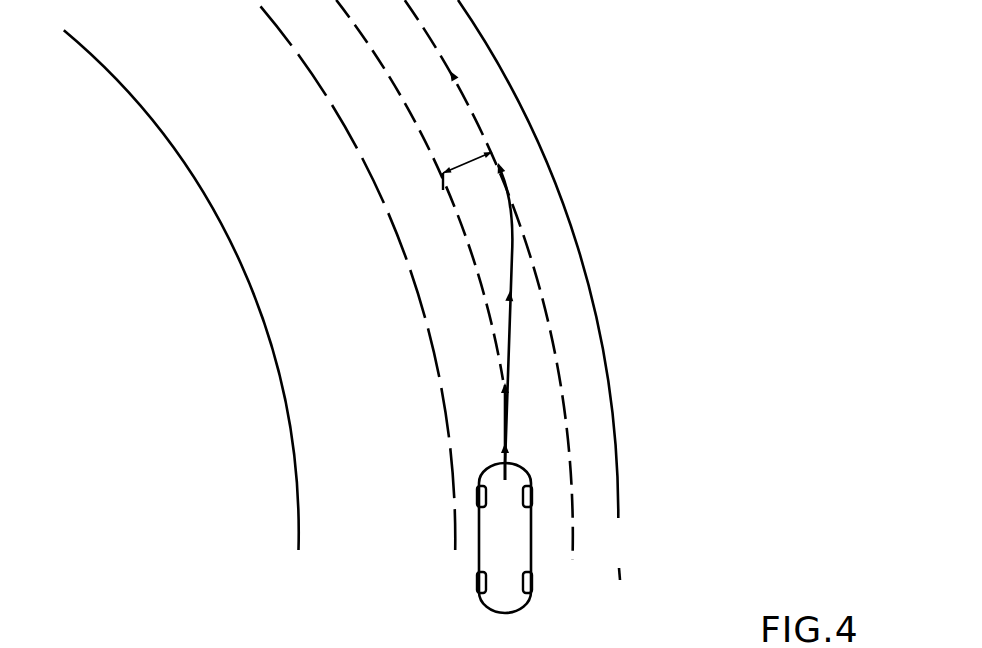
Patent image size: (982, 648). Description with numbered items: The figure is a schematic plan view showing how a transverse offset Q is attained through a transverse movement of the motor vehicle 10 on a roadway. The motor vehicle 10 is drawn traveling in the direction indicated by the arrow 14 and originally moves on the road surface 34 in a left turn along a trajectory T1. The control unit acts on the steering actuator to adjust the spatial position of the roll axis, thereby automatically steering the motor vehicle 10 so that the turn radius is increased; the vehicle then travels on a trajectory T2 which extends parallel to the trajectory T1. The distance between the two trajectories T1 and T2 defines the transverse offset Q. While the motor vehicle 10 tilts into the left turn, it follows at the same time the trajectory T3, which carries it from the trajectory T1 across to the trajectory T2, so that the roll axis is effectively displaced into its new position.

The motor vehicle 10 is at (534, 543).
The arrow indicating direction of travel 14 is at (513, 455).
The road surface 34 is at (393, 450).
The trajectory T1 is at (403, 98).
The trajectory T2 is at (550, 320).
The trajectory T3 is at (515, 255).
The transverse offset Q is at (467, 163).